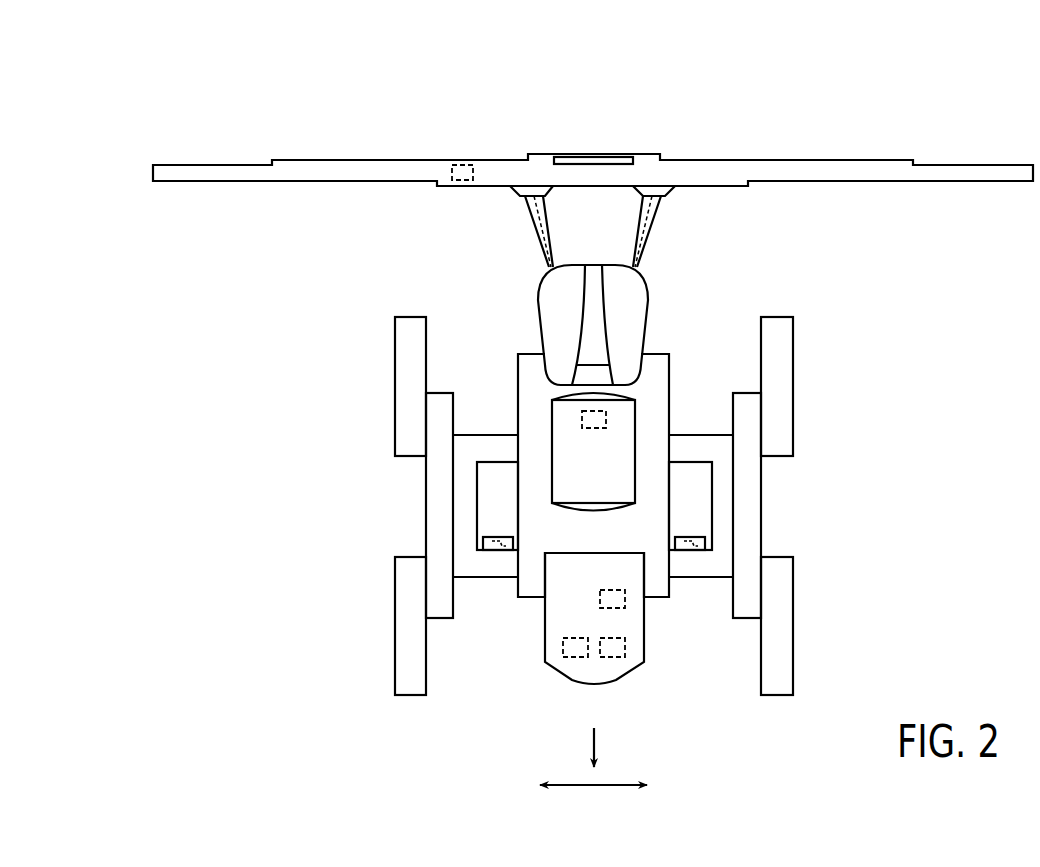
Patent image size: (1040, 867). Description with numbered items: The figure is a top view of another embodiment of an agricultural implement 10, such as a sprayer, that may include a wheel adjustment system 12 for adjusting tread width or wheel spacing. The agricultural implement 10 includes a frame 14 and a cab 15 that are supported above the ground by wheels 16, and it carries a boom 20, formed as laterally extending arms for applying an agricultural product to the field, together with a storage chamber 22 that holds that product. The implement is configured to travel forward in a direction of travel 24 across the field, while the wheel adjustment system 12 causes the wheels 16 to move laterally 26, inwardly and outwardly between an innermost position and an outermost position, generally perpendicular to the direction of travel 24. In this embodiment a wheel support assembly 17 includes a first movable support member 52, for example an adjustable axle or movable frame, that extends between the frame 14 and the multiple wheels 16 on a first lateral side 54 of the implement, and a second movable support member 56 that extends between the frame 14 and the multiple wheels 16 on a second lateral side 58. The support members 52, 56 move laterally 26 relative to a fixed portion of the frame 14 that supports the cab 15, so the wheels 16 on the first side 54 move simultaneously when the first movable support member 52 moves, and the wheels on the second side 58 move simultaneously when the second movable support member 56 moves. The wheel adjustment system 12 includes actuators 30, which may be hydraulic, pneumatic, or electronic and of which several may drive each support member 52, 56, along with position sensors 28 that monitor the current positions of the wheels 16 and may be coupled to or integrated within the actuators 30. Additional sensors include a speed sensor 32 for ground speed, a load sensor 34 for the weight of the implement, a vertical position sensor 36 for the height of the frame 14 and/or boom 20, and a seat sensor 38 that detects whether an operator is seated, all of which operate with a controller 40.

The agricultural implement 10 is at (945, 65).
The wheel adjustment system 12 is at (815, 102).
The frame 14 is at (640, 538).
The cab 15 is at (644, 642).
The wheels 16 is at (405, 372).
The wheel support assembly 17 is at (775, 514).
The boom 20 is at (865, 170).
The storage chamber 22 is at (637, 418).
The direction of travel 24 is at (598, 740).
The lateral direction 26 is at (572, 785).
The position sensors 28 is at (508, 555).
The actuators 30 is at (500, 535).
The speed sensor 32 is at (572, 660).
The load sensor 34 is at (606, 426).
The vertical position sensor 36 is at (462, 165).
The seat sensor 38 is at (610, 590).
The controller 40 is at (616, 660).
The first movable support member 52 is at (745, 530).
The first lateral side 54 is at (773, 482).
The second movable support member 56 is at (440, 527).
The second lateral side 58 is at (412, 503).